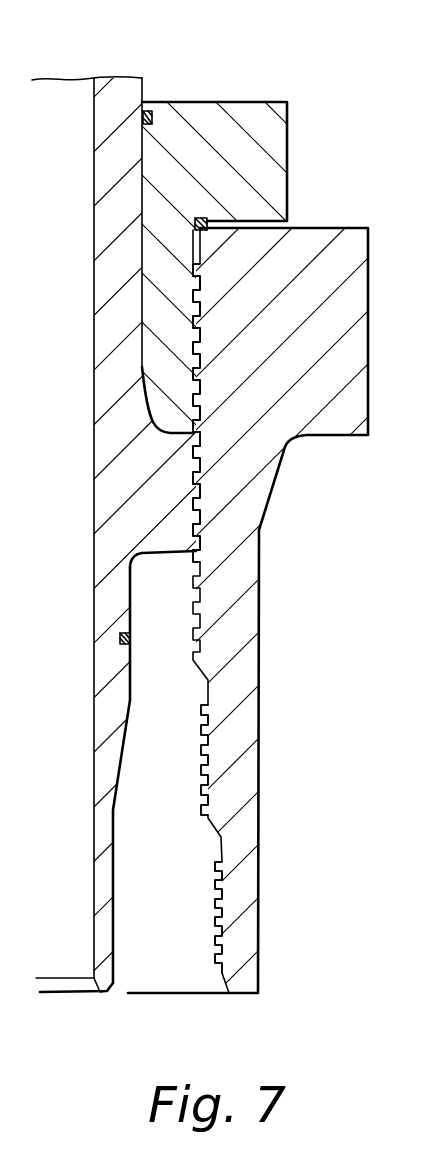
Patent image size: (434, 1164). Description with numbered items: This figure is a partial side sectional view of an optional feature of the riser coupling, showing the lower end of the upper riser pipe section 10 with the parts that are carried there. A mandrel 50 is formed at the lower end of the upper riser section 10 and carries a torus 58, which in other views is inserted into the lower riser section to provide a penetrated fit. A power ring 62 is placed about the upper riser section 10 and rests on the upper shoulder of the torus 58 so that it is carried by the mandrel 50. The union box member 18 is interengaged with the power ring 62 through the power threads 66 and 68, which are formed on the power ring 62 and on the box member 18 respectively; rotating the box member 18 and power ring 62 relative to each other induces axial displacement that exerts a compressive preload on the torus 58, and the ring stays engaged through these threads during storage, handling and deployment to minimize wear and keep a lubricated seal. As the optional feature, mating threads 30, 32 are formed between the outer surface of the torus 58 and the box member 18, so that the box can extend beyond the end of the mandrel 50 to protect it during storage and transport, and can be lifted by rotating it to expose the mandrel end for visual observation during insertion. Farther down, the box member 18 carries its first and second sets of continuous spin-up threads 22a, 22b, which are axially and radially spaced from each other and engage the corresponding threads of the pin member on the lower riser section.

The upper riser pipe section 10 is at (152, 75).
The union box member 18 is at (245, 654).
The first set of spin-up threads on box member 22a is at (203, 748).
The second set of spin-up threads on box member 22b is at (220, 907).
The mating thread on torus 30 is at (193, 488).
The mating thread on box member 32 is at (200, 500).
The mandrel 50 is at (103, 742).
The torus 58 is at (163, 472).
The power ring 62 is at (237, 112).
The power thread on power ring 66 is at (193, 316).
The power thread on box member 68 is at (205, 300).